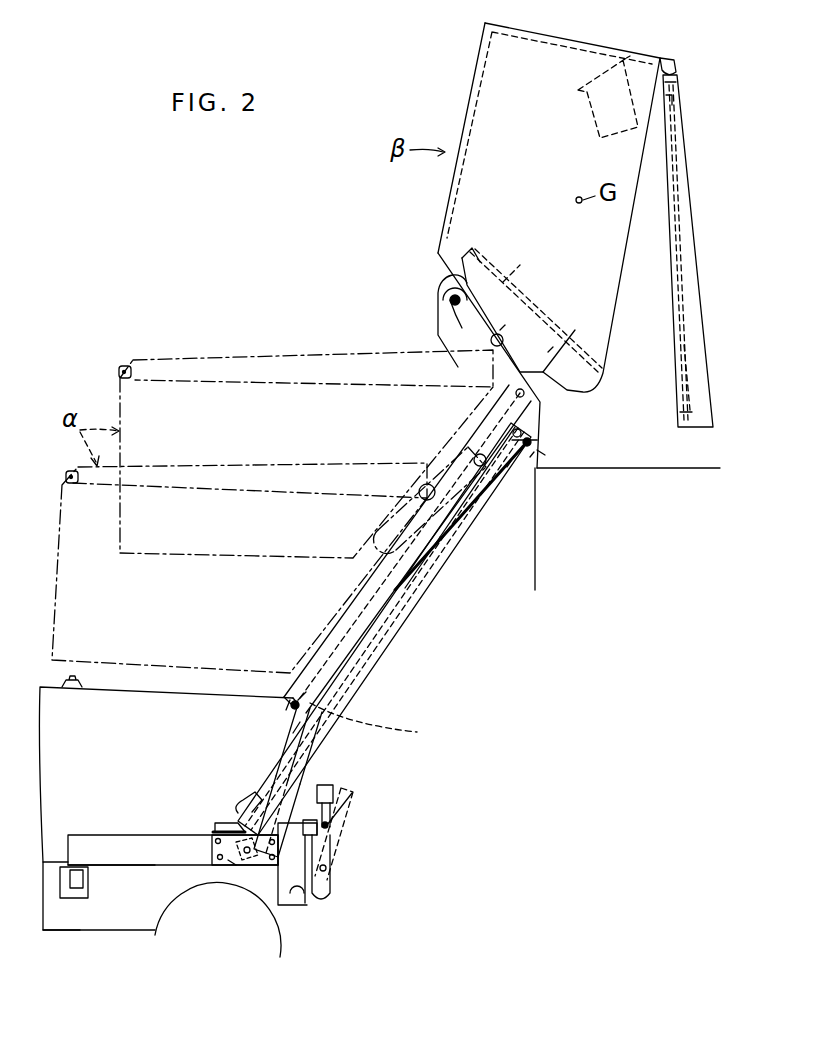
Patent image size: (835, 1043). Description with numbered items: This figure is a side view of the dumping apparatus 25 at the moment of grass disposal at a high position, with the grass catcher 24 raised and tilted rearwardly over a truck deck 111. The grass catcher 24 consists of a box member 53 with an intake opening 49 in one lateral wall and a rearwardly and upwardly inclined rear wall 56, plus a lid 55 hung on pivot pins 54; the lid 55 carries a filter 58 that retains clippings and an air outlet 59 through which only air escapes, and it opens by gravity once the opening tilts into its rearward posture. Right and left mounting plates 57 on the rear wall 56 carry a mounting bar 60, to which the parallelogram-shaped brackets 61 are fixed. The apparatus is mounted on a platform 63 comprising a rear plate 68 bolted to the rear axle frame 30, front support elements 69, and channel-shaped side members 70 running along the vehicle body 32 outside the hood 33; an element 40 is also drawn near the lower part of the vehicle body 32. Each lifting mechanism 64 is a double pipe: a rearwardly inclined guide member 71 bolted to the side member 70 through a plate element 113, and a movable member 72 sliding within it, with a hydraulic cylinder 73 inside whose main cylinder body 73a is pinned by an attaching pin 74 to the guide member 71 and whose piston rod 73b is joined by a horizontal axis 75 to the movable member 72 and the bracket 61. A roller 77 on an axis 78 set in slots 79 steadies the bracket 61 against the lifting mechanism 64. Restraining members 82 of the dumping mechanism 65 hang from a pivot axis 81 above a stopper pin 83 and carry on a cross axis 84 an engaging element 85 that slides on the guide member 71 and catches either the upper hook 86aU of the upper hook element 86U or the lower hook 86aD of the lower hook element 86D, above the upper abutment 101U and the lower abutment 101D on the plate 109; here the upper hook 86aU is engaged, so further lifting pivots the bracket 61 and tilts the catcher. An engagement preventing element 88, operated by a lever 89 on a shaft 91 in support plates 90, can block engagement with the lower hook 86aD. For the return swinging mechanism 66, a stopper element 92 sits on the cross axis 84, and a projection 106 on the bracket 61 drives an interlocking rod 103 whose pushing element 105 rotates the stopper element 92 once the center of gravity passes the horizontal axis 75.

The grass catcher 24 is at (425, 238).
The dumping apparatus 25 is at (348, 621).
The rear axle frame 30 is at (137, 930).
The vehicle body 32 is at (78, 933).
The hood 33 is at (115, 688).
The wheel housing 40 is at (277, 955).
The intake opening 49 is at (593, 117).
The box member 53 is at (620, 249).
The pivot pins 54 is at (669, 62).
The lid 55 is at (677, 294).
The rear wall 56 is at (503, 282).
The mounting plates 57 is at (553, 347).
The filter 58 is at (680, 356).
The air outlet 59 is at (683, 410).
The mounting bar 60 is at (500, 330).
The brackets 61 is at (438, 336).
The platform 63 is at (127, 830).
The lifting mechanisms 64 is at (357, 698).
The dumping mechanisms 65 is at (534, 443).
The return swinging mechanisms 66 is at (286, 703).
The rear plate 68 is at (297, 898).
The front support elements 69 is at (85, 887).
The side members 70 is at (155, 863).
The guide member 71 is at (327, 740).
The movable member 72 is at (388, 538).
The hydraulic cylinder 73 is at (384, 629).
The main cylinder body 73a is at (400, 618).
The piston rod 73b is at (440, 560).
The attaching pin 74 is at (247, 865).
The horizontal axis 75 is at (516, 394).
The roller 77 is at (437, 297).
The axis 78 is at (468, 262).
The slots 79 is at (478, 340).
The pivot axis 81 is at (530, 457).
The restraining members 82 is at (507, 467).
The stopper pin 83 is at (522, 430).
The cross axis 84 is at (290, 700).
The engaging element 85 is at (298, 700).
The upper hook element 86U is at (317, 693).
The lower hook element 86D is at (260, 790).
The upper hook 86aU is at (393, 725).
The lower hook 86aD is at (238, 813).
The engagement preventing element 88 is at (330, 827).
The lever 89 is at (335, 780).
The support plates 90 is at (323, 893).
The shaft 91 is at (327, 868).
The stopper element 92 is at (290, 717).
The upper abutment 101U is at (293, 733).
The lower abutment 101D is at (225, 828).
The interlocking rod 103 is at (473, 513).
The pushing element 105 is at (293, 698).
The projection 106 is at (545, 455).
The plate 109 is at (212, 850).
The truck deck 111 is at (683, 466).
The plate element 113 is at (228, 860).